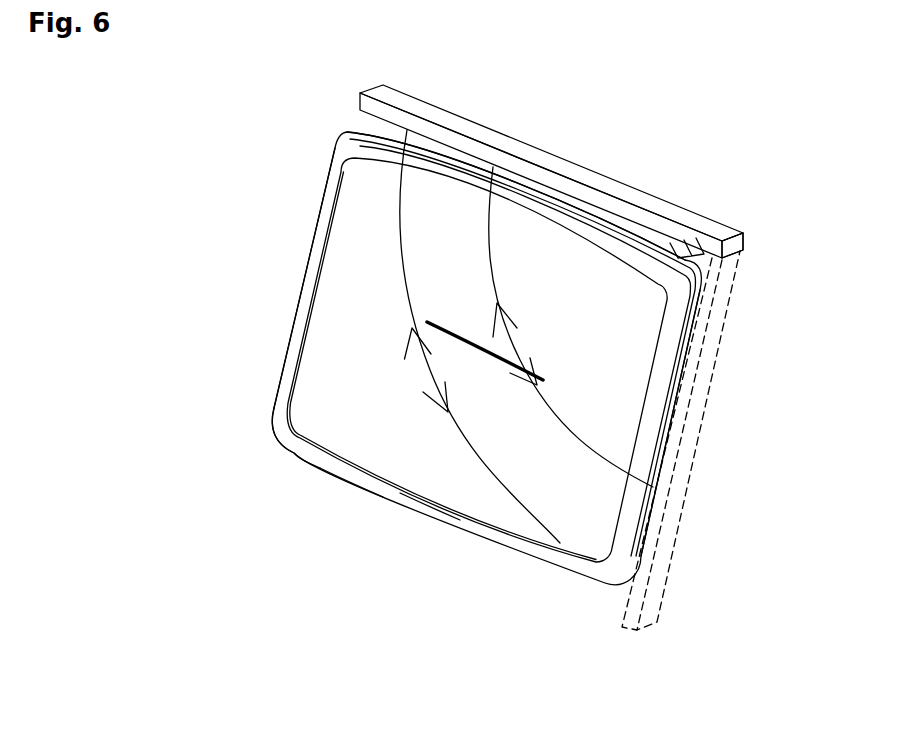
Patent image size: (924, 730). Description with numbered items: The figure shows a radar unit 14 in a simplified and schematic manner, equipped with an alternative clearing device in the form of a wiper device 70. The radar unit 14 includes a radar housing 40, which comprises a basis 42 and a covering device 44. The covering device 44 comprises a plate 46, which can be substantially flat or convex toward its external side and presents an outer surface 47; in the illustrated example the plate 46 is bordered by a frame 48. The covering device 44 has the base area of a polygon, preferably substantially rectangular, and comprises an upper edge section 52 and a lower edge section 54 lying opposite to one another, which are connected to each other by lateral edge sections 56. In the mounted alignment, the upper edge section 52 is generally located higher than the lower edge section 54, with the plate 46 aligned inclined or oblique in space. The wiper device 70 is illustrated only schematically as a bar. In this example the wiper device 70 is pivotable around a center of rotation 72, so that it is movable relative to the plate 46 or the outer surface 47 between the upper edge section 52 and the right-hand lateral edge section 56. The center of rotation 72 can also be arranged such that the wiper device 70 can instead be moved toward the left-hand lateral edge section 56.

The radar unit 14 is at (252, 184).
The radar housing 40 is at (703, 287).
The basis 42 is at (658, 240).
The covering device 44 is at (604, 446).
The plate 46 is at (460, 453).
The outer surface 47 is at (340, 343).
The frame 48 is at (317, 467).
The upper edge section 52 is at (405, 151).
The lower edge section 54 is at (383, 497).
The lateral edge section 56 is at (307, 268).
The wiper device 70 is at (497, 137).
The center of rotation 72 is at (724, 248).